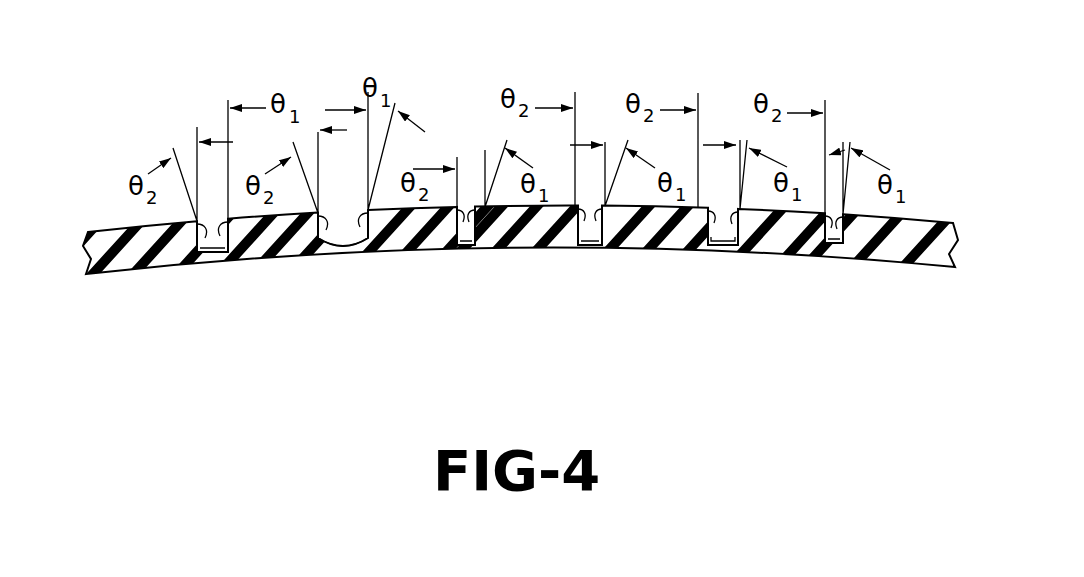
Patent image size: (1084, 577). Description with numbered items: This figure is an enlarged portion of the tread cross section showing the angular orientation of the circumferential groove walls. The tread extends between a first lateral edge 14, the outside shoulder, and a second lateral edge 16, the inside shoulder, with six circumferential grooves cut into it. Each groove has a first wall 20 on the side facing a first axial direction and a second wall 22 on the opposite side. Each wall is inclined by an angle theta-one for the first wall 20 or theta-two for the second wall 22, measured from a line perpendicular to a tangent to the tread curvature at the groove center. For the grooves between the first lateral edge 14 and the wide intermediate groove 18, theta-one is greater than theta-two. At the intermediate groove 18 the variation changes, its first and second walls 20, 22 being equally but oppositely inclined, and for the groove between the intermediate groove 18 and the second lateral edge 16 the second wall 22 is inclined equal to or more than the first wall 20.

The first lateral edge 14 is at (932, 223).
The second lateral edge 16 is at (105, 232).
The intermediate groove 18 is at (340, 228).
The first wall 20 is at (228, 252).
The second wall 22 is at (207, 257).